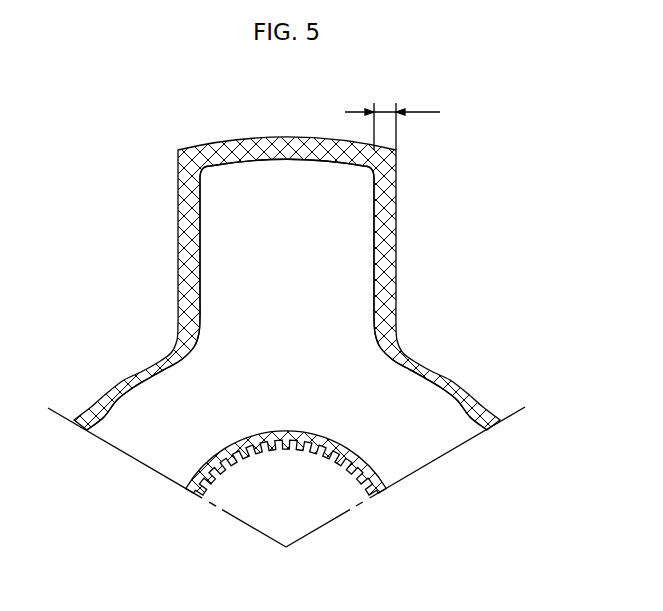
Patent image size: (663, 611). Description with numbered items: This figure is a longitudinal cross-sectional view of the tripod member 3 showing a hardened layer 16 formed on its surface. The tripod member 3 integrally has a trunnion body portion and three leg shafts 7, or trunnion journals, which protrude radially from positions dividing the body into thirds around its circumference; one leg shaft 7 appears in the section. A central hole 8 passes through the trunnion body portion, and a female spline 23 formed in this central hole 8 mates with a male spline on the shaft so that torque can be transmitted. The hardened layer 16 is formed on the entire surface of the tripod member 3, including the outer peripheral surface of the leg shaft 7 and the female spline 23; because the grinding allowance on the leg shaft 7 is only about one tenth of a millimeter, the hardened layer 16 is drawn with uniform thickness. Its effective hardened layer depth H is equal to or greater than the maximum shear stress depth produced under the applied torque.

The tripod member 3 is at (309, 336).
The leg shaft 7 is at (249, 187).
The central hole 8 is at (286, 505).
The hardened layer 16 is at (287, 336).
The female spline 23 is at (335, 462).
The effective hardened layer depth H is at (392, 121).